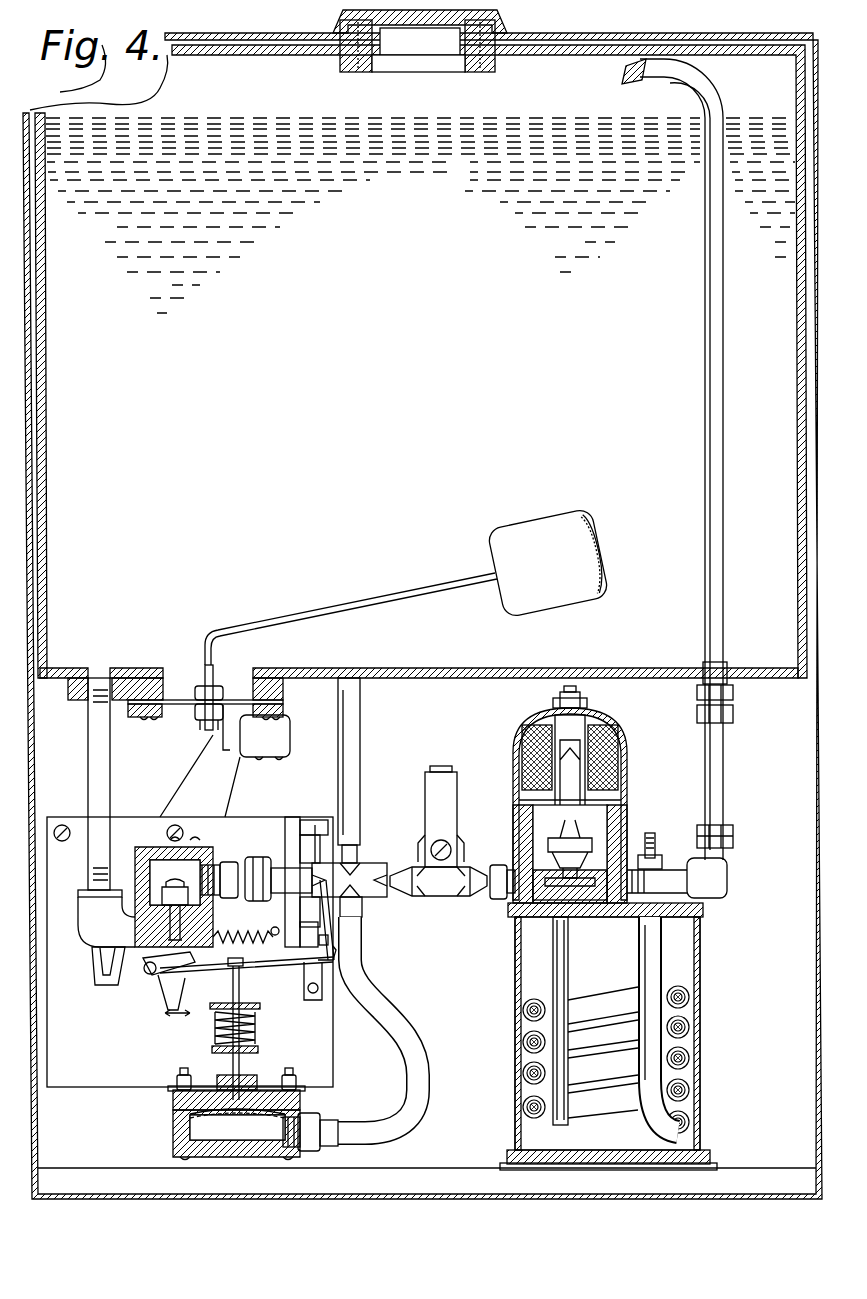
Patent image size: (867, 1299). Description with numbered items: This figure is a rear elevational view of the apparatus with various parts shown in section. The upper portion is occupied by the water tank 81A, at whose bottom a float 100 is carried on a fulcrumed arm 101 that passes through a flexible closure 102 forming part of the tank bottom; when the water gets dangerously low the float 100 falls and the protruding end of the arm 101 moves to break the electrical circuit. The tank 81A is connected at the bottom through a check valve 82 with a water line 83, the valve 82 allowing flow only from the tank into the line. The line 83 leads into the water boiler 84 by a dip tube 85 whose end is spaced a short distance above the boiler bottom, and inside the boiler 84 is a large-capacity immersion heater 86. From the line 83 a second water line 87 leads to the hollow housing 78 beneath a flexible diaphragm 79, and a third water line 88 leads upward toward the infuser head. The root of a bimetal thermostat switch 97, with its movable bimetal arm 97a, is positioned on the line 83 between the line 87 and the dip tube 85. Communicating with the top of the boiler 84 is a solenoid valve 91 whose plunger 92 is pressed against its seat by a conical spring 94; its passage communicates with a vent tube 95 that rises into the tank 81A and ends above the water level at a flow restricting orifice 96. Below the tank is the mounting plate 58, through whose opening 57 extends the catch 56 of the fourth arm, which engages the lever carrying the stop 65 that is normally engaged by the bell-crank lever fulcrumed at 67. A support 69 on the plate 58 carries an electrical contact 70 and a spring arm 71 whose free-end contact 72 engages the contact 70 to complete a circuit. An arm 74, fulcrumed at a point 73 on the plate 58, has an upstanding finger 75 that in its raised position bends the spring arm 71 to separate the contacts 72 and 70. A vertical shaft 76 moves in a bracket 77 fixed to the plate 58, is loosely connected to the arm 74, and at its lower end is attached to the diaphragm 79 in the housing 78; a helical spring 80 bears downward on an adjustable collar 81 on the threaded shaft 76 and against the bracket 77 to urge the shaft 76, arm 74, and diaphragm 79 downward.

The catch 56 is at (116, 962).
The opening 57 is at (102, 972).
The mounting plate 58 is at (104, 1069).
The stop 65 is at (161, 1016).
The fulcrum 67 is at (165, 970).
The support 69 is at (289, 818).
The electrical contact 70 is at (300, 930).
The spring arm 71 is at (333, 920).
The contact 72 is at (323, 944).
The fulcrum point 73 is at (315, 994).
The arm 74 is at (273, 975).
The finger 75 is at (330, 968).
The shaft 76 is at (233, 995).
The bracket 77 is at (258, 1010).
The housing 78 is at (205, 1158).
The diaphragm 79 is at (177, 1134).
The helical spring 80 is at (215, 1032).
The adjustable collar 81 is at (258, 1050).
The water tank 81A is at (558, 57).
The check valve 82 is at (205, 915).
The water line 83 is at (108, 774).
The water boiler 84 is at (702, 955).
The dip tube 85 is at (552, 959).
The immersion heater 86 is at (648, 962).
The second water line 87 is at (388, 1024).
The third water line 88 is at (352, 760).
The solenoid valve 91 is at (533, 710).
The plunger 92 is at (545, 852).
The conical spring 94 is at (530, 815).
The vent tube 95 is at (718, 276).
The flow restricting orifice 96 is at (626, 78).
The bimetal thermostat switch 97 is at (446, 882).
The movable bimetal arm 97a is at (434, 790).
The float 100 is at (565, 557).
The fulcrumed arm 101 is at (298, 618).
The flexible closure 102 is at (176, 698).